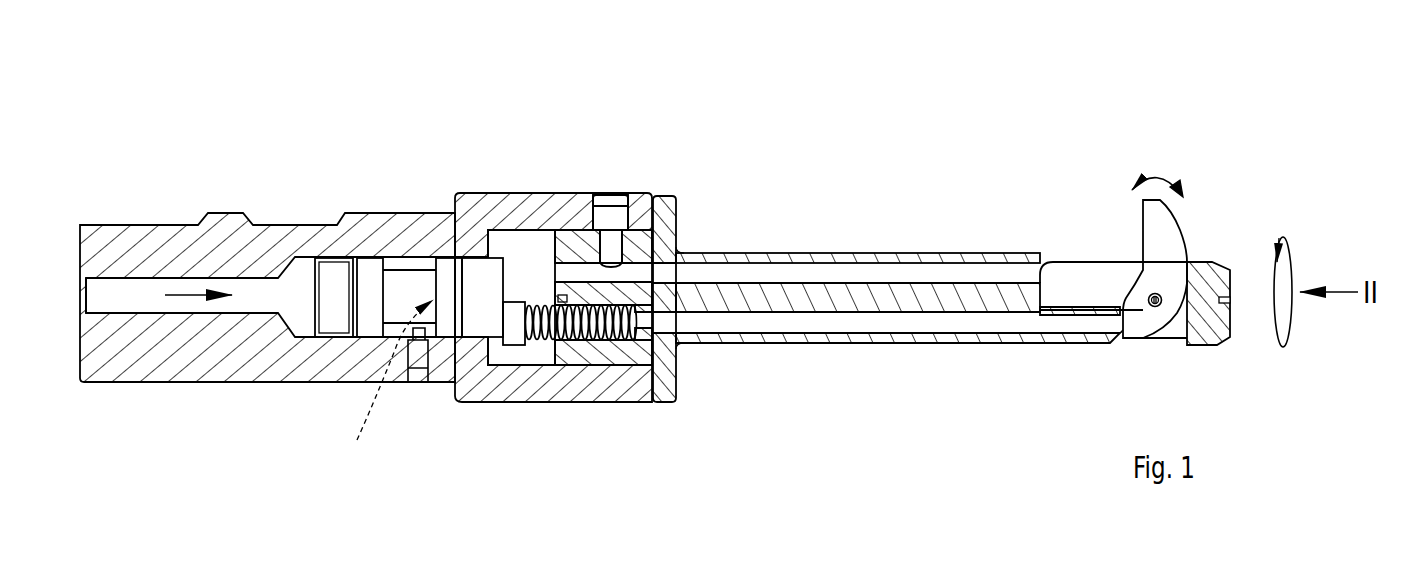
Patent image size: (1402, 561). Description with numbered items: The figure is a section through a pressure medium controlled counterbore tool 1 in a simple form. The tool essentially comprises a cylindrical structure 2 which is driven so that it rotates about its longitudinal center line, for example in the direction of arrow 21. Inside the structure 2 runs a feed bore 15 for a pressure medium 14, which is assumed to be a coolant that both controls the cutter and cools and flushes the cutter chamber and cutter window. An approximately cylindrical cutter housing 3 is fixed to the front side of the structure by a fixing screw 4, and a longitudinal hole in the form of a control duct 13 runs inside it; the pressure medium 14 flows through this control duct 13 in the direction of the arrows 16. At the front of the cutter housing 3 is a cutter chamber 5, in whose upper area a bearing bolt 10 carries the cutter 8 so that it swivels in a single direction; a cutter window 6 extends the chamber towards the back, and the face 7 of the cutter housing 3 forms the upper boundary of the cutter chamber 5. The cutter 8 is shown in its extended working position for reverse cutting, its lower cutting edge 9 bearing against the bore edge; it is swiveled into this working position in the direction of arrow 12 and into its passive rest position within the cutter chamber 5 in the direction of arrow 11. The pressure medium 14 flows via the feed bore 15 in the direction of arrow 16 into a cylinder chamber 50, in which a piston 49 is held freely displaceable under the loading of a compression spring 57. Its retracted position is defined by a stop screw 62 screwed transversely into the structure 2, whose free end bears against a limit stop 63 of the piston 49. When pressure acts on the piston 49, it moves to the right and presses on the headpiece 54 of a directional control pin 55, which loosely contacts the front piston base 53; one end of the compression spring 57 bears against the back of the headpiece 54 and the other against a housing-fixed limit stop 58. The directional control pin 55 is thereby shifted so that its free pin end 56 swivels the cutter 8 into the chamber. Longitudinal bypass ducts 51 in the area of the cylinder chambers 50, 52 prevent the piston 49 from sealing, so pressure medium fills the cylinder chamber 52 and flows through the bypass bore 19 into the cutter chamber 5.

The counterbore tool 1 is at (822, 85).
The cylindrical structure 2 is at (538, 235).
The cutter housing 3 is at (795, 295).
The fixing screw 4 is at (512, 282).
The cutter chamber 5 is at (1078, 272).
The cutter window 6 is at (1172, 322).
The face 7 is at (1220, 260).
The cutter 8 is at (1170, 238).
The cutting edge 9 is at (1142, 245).
The bearing bolt 10 is at (1150, 308).
The arrow 11 is at (1136, 178).
The arrow 12 is at (1178, 182).
The control duct 13 is at (748, 340).
The pressure medium 14 is at (270, 302).
The feed bore 15 is at (112, 290).
The arrow 16 is at (180, 295).
The bypass bore 19 is at (937, 266).
The arrow 21 is at (1293, 278).
The piston 49 is at (405, 295).
The cylinder chamber 50 is at (303, 268).
The bypass ducts 51 is at (358, 252).
The cylinder chamber 52 is at (515, 238).
The piston base 53 is at (612, 225).
The headpiece 54 is at (505, 345).
The directional control pin 55 is at (840, 322).
The pin end 56 is at (1120, 338).
The compression spring 57 is at (518, 345).
The limit stop 58 is at (623, 387).
The stop screw 62 is at (422, 352).
The limit stop 63 is at (377, 387).